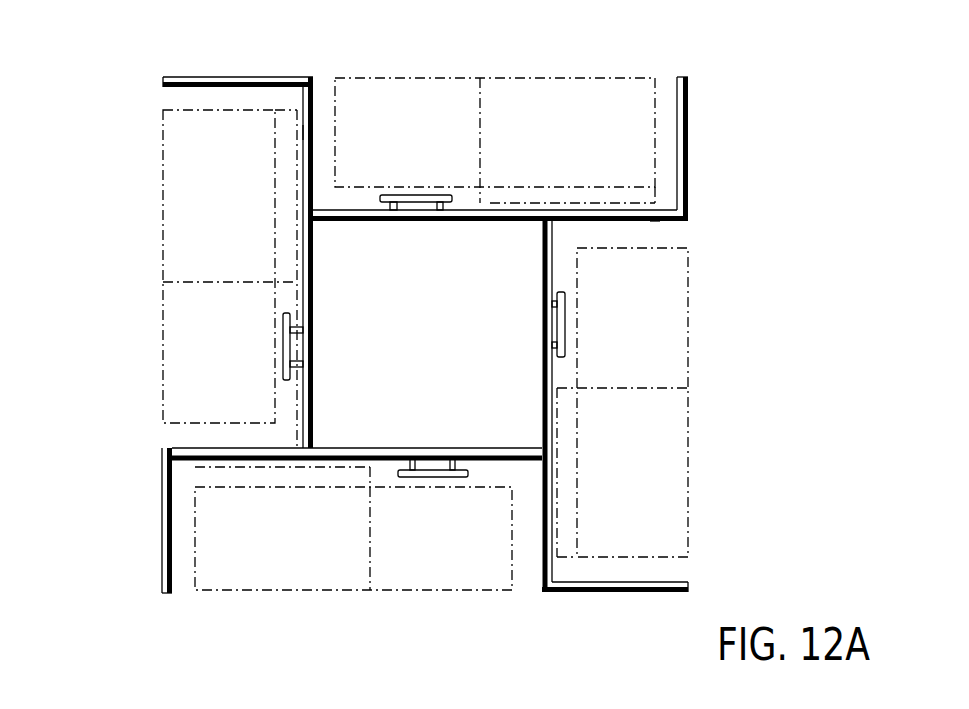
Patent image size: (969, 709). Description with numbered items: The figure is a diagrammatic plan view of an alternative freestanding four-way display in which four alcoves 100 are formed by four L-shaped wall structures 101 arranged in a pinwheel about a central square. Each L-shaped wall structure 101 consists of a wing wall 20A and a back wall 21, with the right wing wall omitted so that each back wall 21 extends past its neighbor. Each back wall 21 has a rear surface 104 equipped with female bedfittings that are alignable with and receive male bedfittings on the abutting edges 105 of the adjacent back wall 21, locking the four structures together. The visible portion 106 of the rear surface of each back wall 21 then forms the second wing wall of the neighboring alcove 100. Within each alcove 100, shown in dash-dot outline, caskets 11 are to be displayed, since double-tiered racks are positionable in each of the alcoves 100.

The casket 11 is at (560, 50).
The wing wall 20A is at (255, 77).
The back wall 21 is at (437, 222).
The alcove 100 is at (492, 45).
The L-shaped wall structure 101 is at (162, 76).
The rear surface 104 is at (348, 225).
The abutting edge 105 is at (313, 205).
The visible portion of rear surface 106 is at (313, 133).